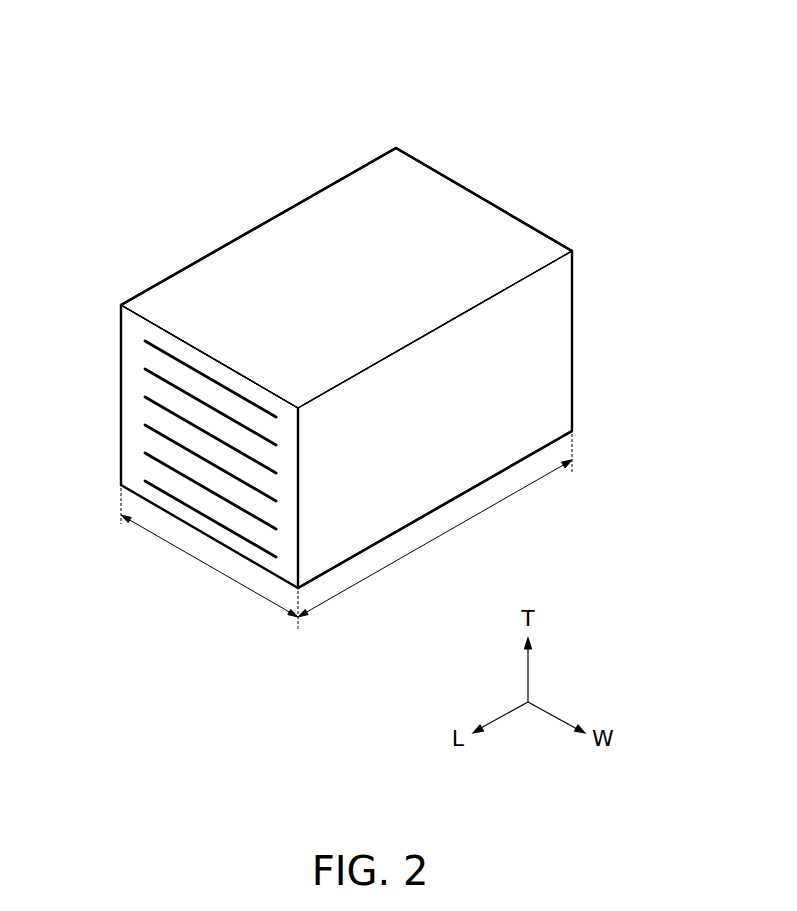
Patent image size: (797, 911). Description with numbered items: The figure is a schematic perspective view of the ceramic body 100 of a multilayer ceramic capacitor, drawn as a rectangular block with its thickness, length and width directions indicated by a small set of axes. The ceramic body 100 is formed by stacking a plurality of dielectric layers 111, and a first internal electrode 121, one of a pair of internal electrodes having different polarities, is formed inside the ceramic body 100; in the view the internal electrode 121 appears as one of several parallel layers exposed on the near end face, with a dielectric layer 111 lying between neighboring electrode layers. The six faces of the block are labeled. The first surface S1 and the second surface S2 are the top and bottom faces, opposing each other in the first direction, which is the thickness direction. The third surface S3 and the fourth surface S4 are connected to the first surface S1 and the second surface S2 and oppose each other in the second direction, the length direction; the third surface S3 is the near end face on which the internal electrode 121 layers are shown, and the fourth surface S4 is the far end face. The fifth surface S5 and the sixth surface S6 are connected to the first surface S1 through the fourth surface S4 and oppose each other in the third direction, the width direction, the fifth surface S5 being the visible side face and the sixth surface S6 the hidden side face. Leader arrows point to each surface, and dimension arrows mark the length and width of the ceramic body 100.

The ceramic body 100 is at (146, 44).
The dielectric layer 111 is at (146, 388).
The first internal electrode 121 is at (146, 342).
The first surface S1 is at (348, 208).
The second surface S2 is at (355, 538).
The third surface S3 is at (199, 509).
The fourth surface S4 is at (469, 222).
The fifth surface S5 is at (553, 356).
The sixth surface S6 is at (190, 292).